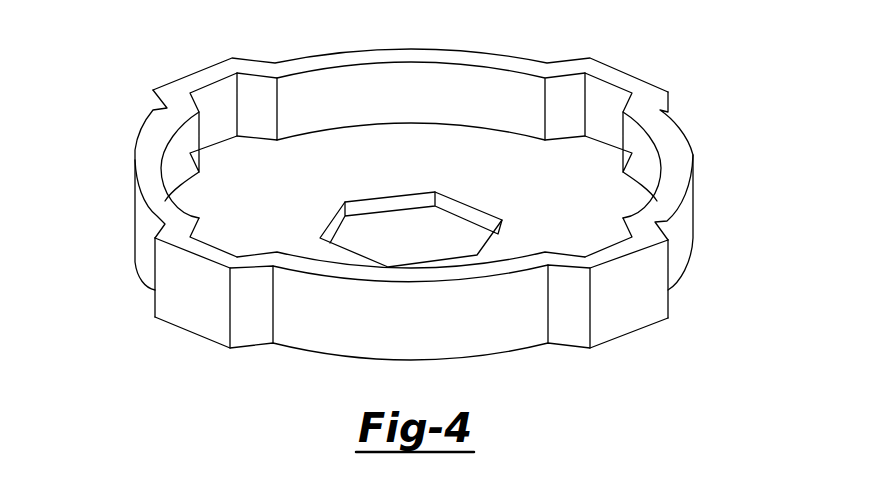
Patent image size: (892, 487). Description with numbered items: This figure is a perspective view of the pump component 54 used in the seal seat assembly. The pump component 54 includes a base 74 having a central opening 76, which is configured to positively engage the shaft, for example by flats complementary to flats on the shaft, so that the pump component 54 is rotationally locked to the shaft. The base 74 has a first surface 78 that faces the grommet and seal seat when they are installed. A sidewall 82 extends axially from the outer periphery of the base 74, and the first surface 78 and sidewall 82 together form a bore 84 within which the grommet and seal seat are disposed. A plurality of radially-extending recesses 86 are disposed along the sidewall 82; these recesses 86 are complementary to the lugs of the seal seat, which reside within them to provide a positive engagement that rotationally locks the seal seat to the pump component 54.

The pump component 54 is at (449, 183).
The base 74 is at (462, 137).
The central opening 76 is at (395, 235).
The first surface 78 is at (603, 213).
The sidewall 82 is at (320, 88).
The bore 84 is at (247, 115).
The radially-extending recesses 86 is at (206, 102).